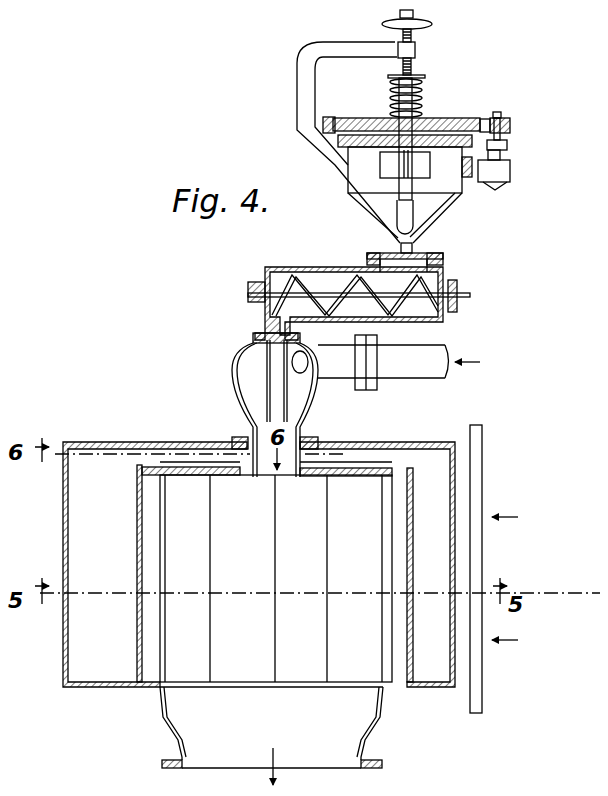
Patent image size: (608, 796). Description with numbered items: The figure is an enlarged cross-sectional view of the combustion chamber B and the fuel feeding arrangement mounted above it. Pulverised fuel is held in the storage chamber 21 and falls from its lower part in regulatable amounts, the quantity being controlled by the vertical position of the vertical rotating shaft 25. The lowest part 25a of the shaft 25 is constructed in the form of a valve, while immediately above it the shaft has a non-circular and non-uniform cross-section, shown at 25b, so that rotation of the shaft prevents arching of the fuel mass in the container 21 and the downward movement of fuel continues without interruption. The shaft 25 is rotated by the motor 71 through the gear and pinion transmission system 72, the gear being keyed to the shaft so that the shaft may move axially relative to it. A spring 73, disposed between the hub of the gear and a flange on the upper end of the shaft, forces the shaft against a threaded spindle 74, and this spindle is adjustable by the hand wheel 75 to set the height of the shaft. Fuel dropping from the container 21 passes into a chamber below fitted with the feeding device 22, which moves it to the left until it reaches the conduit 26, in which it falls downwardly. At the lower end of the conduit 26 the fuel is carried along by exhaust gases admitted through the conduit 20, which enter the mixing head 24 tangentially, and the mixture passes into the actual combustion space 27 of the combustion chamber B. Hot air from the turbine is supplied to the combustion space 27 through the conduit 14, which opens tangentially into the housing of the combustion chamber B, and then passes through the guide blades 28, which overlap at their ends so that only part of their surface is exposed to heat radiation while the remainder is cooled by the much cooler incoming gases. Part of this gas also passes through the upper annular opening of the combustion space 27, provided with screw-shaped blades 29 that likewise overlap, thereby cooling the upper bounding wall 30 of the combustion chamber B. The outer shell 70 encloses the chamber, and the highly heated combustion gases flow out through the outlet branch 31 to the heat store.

The hand wheel 75 is at (428, 26).
The threaded spindle 74 is at (412, 66).
The spring 73 is at (418, 93).
The gear and pinion transmission system 72 is at (478, 118).
The motor 71 is at (512, 170).
The storage chamber 21 is at (437, 212).
The vertical rotating shaft 25 is at (396, 222).
The non-circular shaft portion 25b is at (400, 240).
The valve part of shaft 25a is at (444, 252).
The feeding device 22 is at (286, 280).
The conduit 26 is at (266, 325).
The mixing head 24 is at (238, 400).
The exhaust gas conduit 20 is at (436, 378).
The outer shell 70 is at (418, 452).
The hot air conduit 14 is at (482, 480).
The screw-shaped blades 29 is at (192, 492).
The upper bounding wall 30 is at (170, 460).
The combustion chamber B is at (139, 456).
The combustion space 27 is at (276, 578).
The guide blades 28 is at (277, 650).
The outlet branch 31 is at (288, 758).